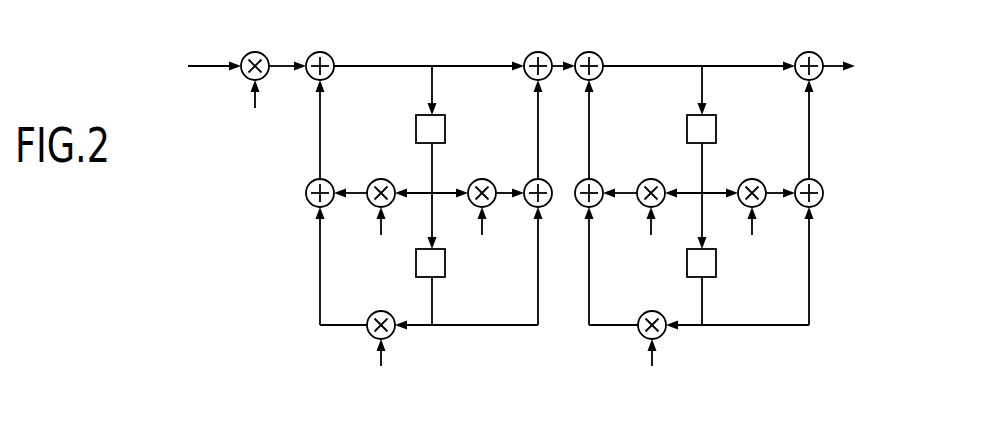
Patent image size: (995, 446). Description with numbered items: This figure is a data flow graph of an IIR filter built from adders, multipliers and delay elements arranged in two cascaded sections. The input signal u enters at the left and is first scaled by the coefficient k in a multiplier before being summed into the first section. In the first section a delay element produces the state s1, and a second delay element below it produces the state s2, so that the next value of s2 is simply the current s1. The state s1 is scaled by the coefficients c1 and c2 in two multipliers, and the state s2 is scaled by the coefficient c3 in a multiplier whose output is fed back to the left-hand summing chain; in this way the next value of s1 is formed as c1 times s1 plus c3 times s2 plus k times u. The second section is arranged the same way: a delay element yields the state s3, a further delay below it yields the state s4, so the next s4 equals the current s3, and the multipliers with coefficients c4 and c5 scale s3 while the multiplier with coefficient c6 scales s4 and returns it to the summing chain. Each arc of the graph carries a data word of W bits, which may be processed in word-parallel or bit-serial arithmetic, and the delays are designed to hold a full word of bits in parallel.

The input signal u(t) u is at (214, 49).
The coefficient k is at (255, 92).
The state s1(t) s1 is at (461, 105).
The state s2(t) s2 is at (461, 228).
The state s3(t) s3 is at (732, 105).
The state s4(t) s4 is at (732, 228).
The coefficient c1 is at (366, 223).
The coefficient c2 is at (496, 223).
The coefficient c3 is at (429, 355).
The coefficient c4 is at (635, 223).
The coefficient c5 is at (766, 223).
The coefficient c6 is at (699, 355).